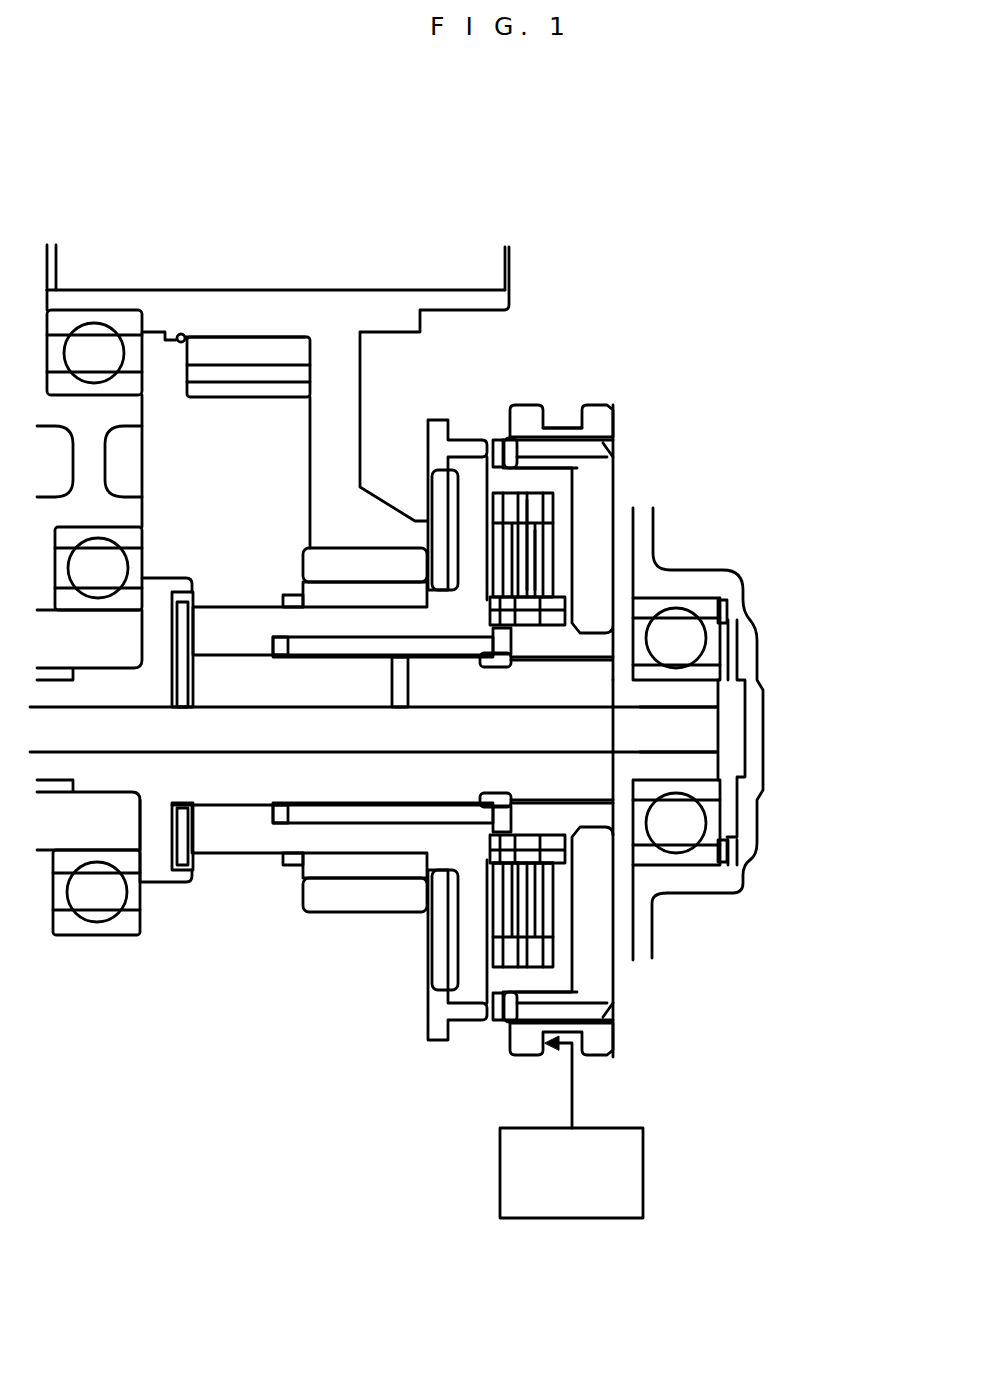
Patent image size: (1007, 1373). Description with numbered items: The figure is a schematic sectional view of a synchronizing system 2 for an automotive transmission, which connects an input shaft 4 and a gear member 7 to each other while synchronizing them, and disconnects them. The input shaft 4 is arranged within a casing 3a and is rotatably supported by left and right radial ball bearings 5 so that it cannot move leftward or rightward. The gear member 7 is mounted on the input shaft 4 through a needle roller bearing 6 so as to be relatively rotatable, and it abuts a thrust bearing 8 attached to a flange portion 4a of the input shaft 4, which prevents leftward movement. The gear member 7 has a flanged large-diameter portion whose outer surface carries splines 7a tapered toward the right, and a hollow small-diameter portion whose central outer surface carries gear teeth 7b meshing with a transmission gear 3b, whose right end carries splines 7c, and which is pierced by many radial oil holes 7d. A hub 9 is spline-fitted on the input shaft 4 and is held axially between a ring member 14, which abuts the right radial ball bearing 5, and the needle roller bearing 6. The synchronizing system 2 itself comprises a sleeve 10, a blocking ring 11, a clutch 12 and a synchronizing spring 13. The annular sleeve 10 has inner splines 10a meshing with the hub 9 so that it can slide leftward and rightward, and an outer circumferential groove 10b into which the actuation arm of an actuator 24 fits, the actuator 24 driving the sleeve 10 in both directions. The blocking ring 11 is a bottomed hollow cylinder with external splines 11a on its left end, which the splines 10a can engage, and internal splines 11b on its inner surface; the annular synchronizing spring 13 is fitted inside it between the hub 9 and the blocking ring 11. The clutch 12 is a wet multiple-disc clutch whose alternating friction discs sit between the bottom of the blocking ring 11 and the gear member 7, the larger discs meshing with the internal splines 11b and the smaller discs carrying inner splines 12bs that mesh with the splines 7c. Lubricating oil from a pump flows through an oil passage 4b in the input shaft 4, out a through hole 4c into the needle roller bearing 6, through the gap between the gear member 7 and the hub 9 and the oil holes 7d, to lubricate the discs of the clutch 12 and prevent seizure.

The synchronizing system 2 is at (724, 284).
The casing 3a is at (733, 570).
The transmission gear 3b is at (318, 478).
The input shaft 4 is at (436, 797).
The flange portion 4a is at (152, 873).
The oil passage 4b is at (657, 750).
The through hole 4c is at (402, 697).
The radial ball bearing 5 is at (140, 548).
The needle roller bearing 6 is at (320, 647).
The gear member 7 is at (230, 606).
The splines 7a is at (467, 440).
The gear teeth 7b is at (300, 560).
The splines 7c is at (497, 603).
The oil holes 7d is at (547, 618).
The thrust bearing 8 is at (185, 612).
The hub 9 is at (615, 490).
The sleeve 10 is at (610, 715).
The splines 10a is at (613, 447).
The groove 10b is at (577, 427).
The blocking ring 11 is at (470, 727).
The external splines 11a is at (508, 1023).
The internal splines 11b is at (533, 513).
The clutch 12 is at (507, 535).
The splines 12bs is at (527, 847).
The synchronizing spring 13 is at (502, 440).
The ring member 14 is at (620, 805).
The actuator 24 is at (560, 1220).